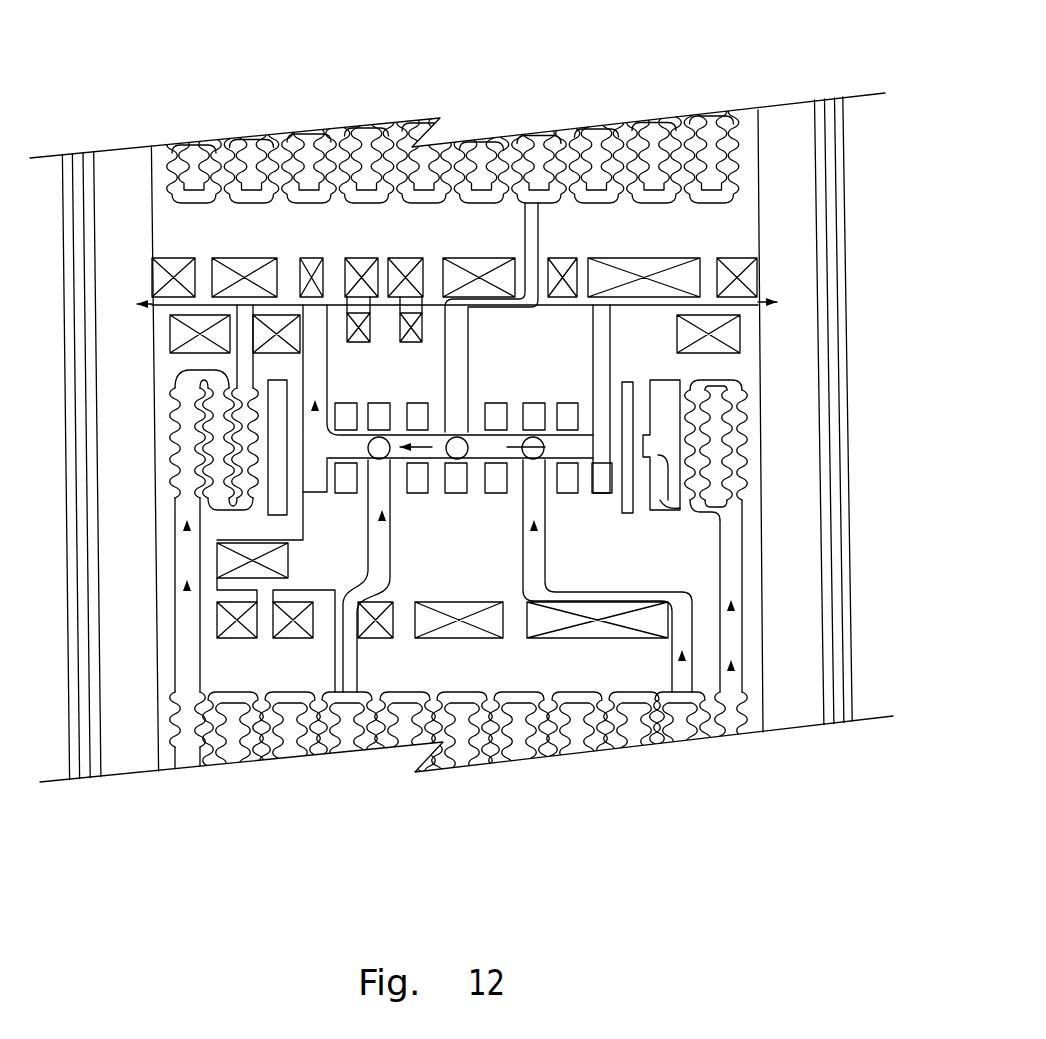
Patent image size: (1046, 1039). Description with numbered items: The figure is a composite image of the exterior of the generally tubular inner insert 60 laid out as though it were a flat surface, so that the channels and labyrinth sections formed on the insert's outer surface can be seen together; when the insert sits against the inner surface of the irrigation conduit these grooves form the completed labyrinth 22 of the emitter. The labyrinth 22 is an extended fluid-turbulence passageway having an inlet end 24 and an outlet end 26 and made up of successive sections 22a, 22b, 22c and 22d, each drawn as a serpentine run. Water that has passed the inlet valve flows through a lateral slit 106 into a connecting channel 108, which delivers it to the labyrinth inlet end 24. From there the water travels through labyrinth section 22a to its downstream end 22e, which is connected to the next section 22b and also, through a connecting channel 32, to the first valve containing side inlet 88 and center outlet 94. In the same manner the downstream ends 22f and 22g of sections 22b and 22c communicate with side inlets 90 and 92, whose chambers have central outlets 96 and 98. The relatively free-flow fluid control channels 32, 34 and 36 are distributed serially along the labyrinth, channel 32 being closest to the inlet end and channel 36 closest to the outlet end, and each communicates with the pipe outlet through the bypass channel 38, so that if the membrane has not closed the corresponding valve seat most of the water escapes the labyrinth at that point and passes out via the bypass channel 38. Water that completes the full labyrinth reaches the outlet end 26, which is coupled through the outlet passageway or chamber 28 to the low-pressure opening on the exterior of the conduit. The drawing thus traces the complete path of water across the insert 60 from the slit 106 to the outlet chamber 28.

The labyrinth 22 is at (443, 776).
The labyrinth section 22a is at (700, 746).
The labyrinth section 22b is at (598, 138).
The labyrinth section 22c is at (400, 748).
The labyrinth section 22d is at (271, 758).
The downstream end of labyrinth section 22e is at (665, 742).
The downstream end of labyrinth section 22f is at (650, 124).
The downstream end of labyrinth section 22g is at (343, 724).
The inlet end 24 is at (731, 491).
The outlet end 26 is at (240, 380).
The outlet passageway 28 is at (132, 198).
The fluid control channel 32 is at (528, 532).
The fluid control channel 34 is at (455, 288).
The fluid control channel 36 is at (376, 576).
The bypass channel 38 is at (296, 290).
The inner insert 60 is at (779, 754).
The side inlet 88 is at (547, 478).
The side inlet 90 is at (470, 428).
The side inlet 92 is at (368, 480).
The central outlet 94 is at (548, 430).
The central outlet 96 is at (462, 462).
The central outlet 98 is at (376, 428).
The lateral slit 106 is at (700, 420).
The connecting channel 108 is at (665, 520).